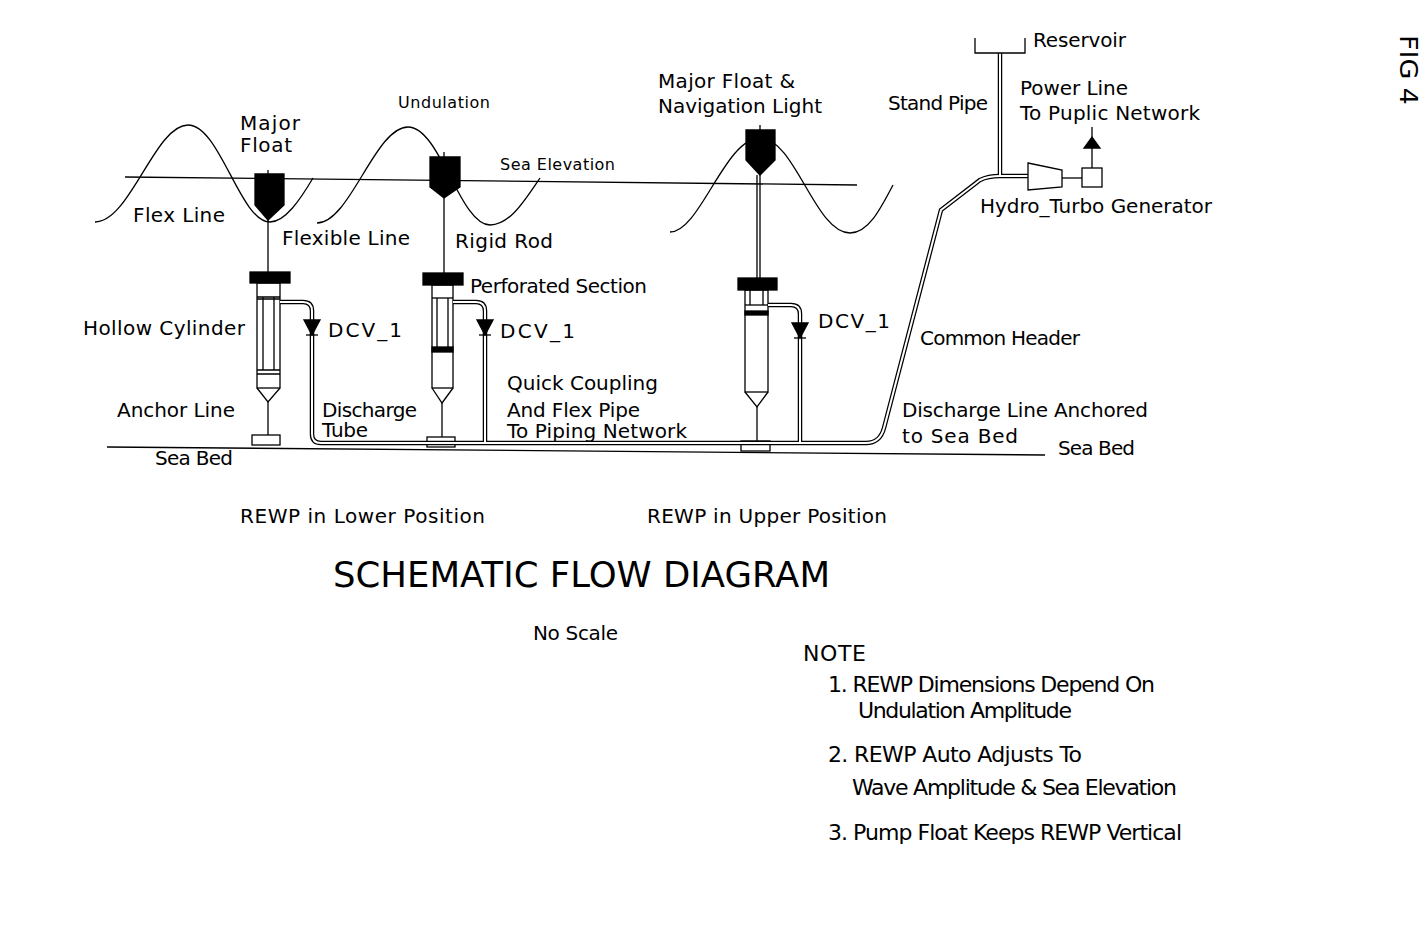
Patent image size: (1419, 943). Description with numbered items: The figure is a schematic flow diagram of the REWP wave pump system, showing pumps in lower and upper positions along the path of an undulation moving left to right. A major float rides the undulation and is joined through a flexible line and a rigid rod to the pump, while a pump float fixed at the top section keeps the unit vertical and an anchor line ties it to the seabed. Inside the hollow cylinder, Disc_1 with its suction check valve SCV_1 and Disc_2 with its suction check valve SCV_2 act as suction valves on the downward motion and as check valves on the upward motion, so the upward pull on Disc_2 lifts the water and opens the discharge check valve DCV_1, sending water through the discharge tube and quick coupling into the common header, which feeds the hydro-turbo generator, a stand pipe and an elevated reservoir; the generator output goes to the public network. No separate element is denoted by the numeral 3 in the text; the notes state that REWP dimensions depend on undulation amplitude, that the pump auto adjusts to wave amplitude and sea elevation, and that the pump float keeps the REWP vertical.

The Disc_1 with suction check valve SCV_ 1 is at (181, 290).
The Disc_2 with suction check valve SCV_ 2 is at (181, 371).
The Pump Float 3 is at (325, 273).